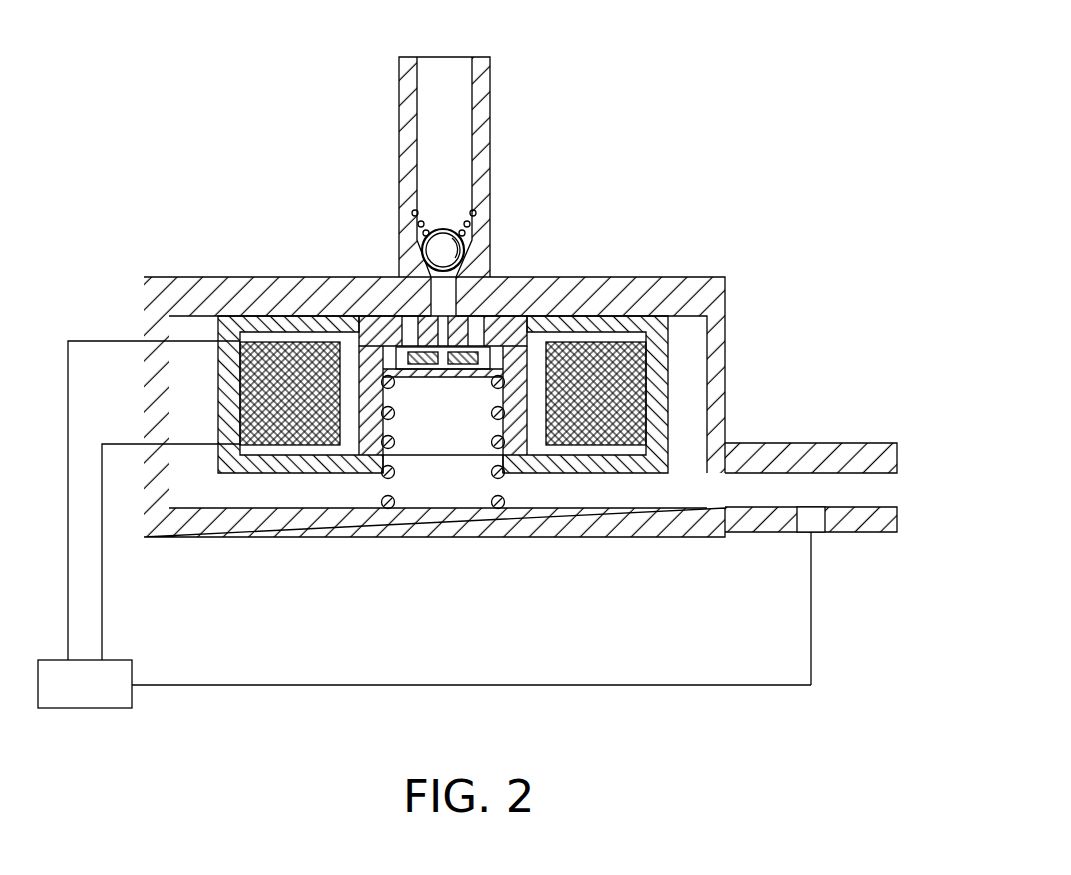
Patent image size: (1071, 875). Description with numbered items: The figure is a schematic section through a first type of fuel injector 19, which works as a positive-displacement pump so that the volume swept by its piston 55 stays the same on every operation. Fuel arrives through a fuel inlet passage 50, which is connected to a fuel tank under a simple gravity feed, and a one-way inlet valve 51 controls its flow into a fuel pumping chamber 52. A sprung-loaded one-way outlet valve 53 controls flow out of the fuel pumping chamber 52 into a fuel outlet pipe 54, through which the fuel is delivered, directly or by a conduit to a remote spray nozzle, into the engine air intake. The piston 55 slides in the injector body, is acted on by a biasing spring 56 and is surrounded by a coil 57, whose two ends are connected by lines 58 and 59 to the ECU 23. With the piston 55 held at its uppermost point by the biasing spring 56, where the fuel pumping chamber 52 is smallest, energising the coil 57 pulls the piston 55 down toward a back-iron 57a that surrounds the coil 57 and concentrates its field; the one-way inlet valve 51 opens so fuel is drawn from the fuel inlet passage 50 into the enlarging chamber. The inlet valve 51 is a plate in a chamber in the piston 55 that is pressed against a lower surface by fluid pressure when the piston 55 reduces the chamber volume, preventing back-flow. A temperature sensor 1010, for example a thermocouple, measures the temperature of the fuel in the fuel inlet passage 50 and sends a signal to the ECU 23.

The injector 19 is at (265, 62).
The fuel outlet pipe 54 is at (488, 118).
The sprung-loaded one-way outlet valve 53 is at (432, 244).
The fuel pumping chamber 52 is at (478, 320).
The one-way inlet valve 51 is at (438, 374).
The piston 55 is at (378, 425).
The biasing spring 56 is at (398, 471).
The coil 57 is at (320, 358).
The back-iron 57a is at (242, 323).
The line 58 is at (104, 341).
The line 59 is at (124, 444).
The fuel inlet passage 50 is at (785, 487).
The temperature sensor 1010 is at (810, 532).
The ECU 23 is at (132, 662).